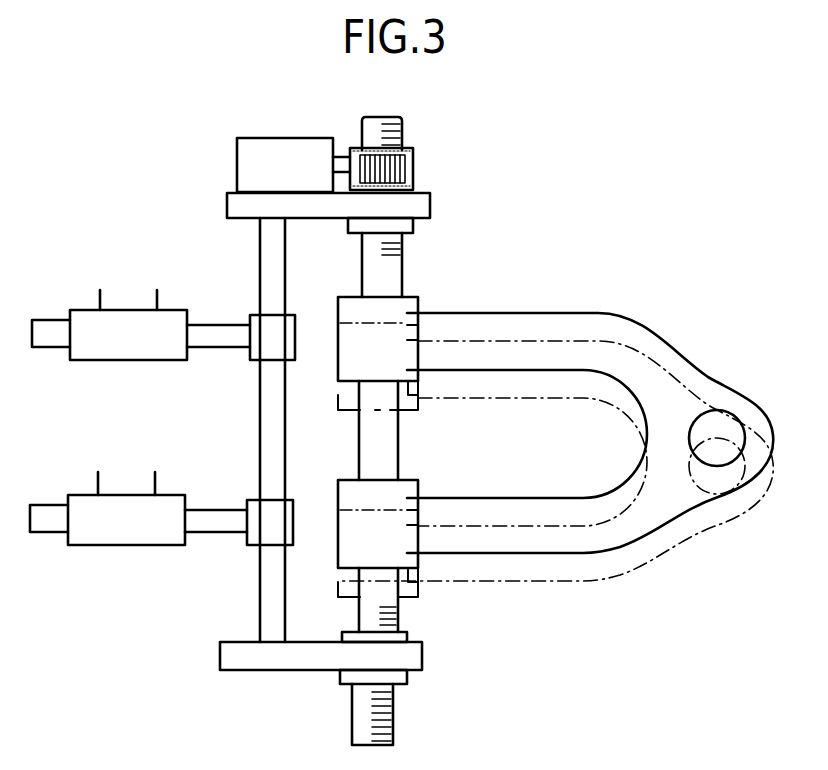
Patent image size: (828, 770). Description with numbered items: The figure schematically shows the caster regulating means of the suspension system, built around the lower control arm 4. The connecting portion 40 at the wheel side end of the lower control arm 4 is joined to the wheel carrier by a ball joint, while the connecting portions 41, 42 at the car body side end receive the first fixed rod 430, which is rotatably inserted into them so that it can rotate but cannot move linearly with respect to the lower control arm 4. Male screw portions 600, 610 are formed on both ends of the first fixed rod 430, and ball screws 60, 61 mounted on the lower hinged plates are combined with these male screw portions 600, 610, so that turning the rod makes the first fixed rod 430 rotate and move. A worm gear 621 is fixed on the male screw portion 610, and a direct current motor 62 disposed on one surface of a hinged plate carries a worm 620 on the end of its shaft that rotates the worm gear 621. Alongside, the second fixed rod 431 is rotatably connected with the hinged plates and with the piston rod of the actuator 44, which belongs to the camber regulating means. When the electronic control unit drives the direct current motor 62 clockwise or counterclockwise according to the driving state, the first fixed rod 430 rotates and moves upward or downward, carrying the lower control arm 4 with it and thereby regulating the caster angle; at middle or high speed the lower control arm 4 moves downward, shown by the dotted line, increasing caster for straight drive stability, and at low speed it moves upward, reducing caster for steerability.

The lower control arm 4 is at (617, 333).
The connecting portion 40 is at (743, 403).
The connecting portion 41 is at (350, 557).
The connecting portion 42 is at (418, 301).
The first fixed rod 430 is at (383, 445).
The second fixed rod 431 is at (266, 415).
The actuator 44 is at (110, 353).
The ball screw 60 is at (400, 638).
The male screw portion 600 is at (350, 723).
The ball screw 61 is at (414, 228).
The male screw portion 610 is at (362, 249).
The direct current motor 62 is at (285, 150).
The worm 620 is at (406, 150).
The worm gear 621 is at (414, 172).